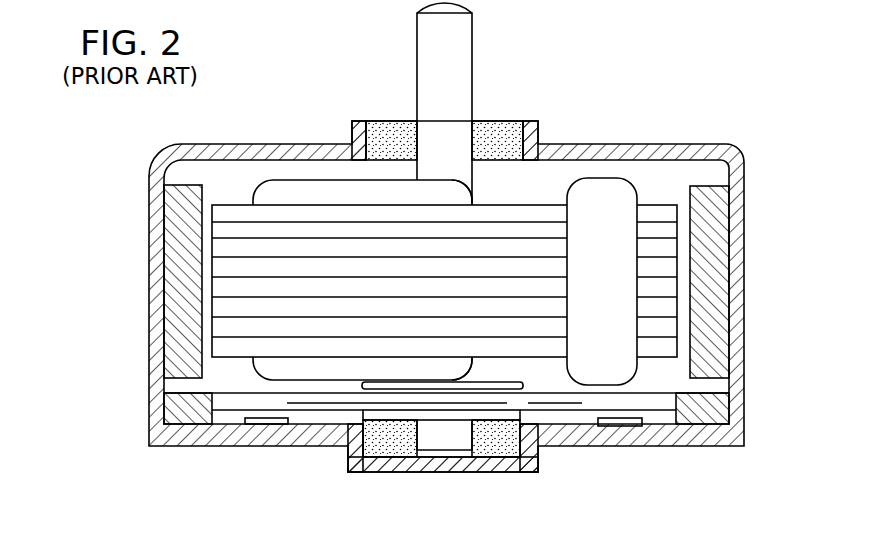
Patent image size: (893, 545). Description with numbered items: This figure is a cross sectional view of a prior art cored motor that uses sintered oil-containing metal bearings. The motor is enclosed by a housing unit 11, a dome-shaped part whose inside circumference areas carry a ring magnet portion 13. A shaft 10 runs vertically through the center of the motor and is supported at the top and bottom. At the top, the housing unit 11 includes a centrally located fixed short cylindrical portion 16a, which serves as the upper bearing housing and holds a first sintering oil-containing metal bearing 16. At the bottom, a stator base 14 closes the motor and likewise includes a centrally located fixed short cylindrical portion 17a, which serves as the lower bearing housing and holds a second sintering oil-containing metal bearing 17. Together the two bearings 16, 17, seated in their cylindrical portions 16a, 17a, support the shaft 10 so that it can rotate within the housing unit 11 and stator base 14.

The shaft 10 is at (453, 88).
The housing unit 11 is at (740, 162).
The ring magnet portion 13 is at (165, 277).
The stator base 14 is at (177, 412).
The first sintering oil-containing metal bearing 16 is at (513, 120).
The upper cylindrical bearing housing portion 16a is at (537, 135).
The second sintering oil-containing metal bearing 17 is at (497, 443).
The lower cylindrical bearing housing portion 17a is at (538, 448).